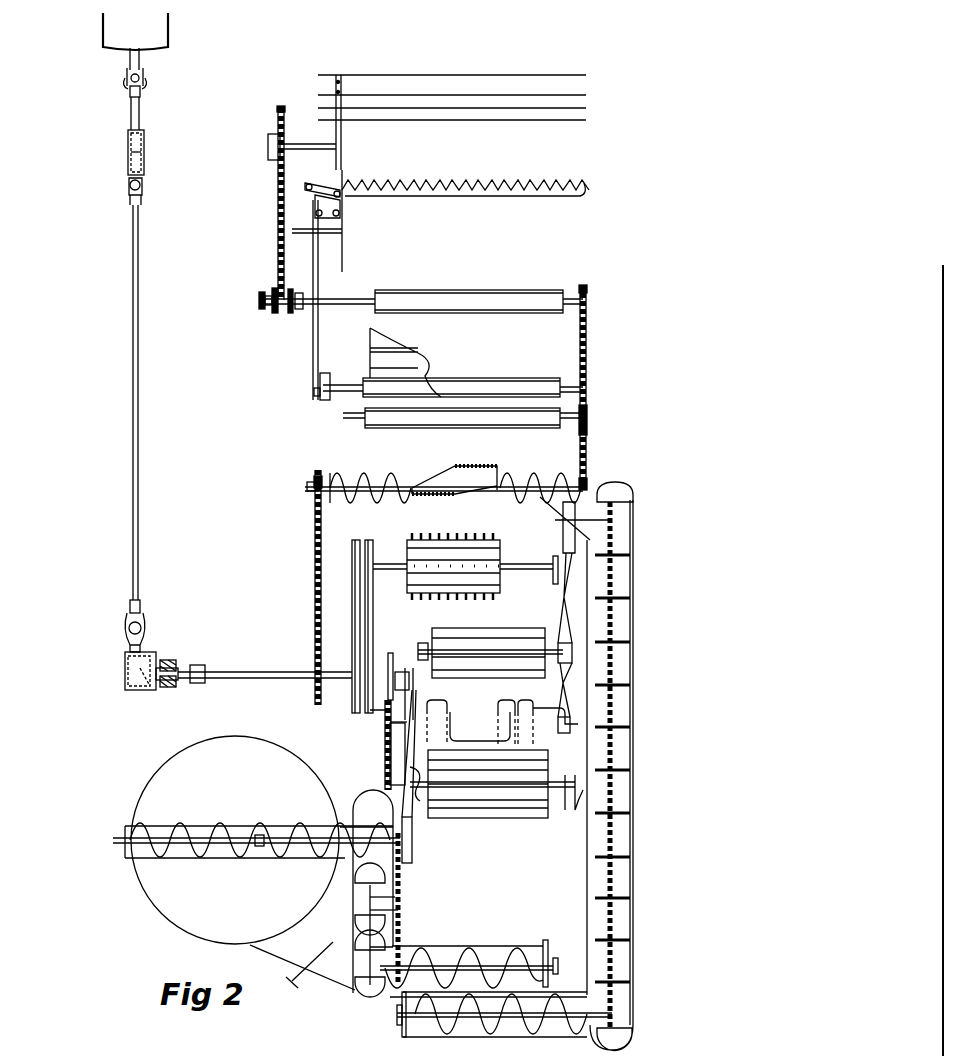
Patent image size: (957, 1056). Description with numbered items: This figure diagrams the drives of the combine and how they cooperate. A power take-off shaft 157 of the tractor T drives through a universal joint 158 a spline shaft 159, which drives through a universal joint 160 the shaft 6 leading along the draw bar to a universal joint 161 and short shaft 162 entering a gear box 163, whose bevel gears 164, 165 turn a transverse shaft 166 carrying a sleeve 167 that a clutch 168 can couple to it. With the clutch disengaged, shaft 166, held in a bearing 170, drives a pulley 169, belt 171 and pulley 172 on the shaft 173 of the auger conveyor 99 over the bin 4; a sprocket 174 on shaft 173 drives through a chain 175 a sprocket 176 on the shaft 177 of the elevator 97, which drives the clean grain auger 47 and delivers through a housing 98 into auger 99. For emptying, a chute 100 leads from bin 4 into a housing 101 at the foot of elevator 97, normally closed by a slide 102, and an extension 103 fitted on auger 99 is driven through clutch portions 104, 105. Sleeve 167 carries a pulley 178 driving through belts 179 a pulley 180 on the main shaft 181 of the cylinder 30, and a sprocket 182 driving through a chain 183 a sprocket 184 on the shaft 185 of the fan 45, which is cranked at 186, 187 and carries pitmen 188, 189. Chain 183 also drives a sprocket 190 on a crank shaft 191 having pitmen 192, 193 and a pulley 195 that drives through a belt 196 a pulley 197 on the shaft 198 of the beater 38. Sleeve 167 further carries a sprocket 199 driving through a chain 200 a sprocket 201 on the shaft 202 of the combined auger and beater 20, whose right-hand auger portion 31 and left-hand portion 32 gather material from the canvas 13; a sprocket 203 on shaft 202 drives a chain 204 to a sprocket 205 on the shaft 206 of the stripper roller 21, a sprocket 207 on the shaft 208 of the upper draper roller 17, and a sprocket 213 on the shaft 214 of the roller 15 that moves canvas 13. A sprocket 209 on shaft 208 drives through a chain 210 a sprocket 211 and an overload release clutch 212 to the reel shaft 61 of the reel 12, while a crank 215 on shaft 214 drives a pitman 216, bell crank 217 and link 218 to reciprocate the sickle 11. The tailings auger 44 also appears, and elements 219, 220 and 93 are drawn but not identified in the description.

The tractor T is at (100, 30).
The power take-off shaft 6 is at (132, 366).
The power take-off shaft 157 is at (141, 65).
The universal joint 158 is at (143, 92).
The spline shaft 159 is at (148, 129).
The universal joint 160 is at (149, 185).
The universal joint 161 is at (154, 616).
The short shaft 162 is at (152, 641).
The gear box 163 is at (120, 673).
The bevel gear 164 is at (126, 664).
The bevel gear 165 is at (140, 688).
The transverse shaft 166 is at (178, 690).
The sleeve 167 is at (232, 678).
The clutch means 168 is at (208, 640).
The reel 12 is at (306, 93).
The reel shaft 61 is at (305, 128).
The chain 210 is at (280, 224).
The sprocket 211 is at (280, 112).
The overload release clutch 212 is at (268, 147).
The link 218 is at (333, 183).
The bell crank member 217 is at (302, 208).
The pitman 216 is at (313, 342).
The sickle 11 is at (396, 190).
The shaft 208 is at (328, 300).
The sprocket 219 is at (258, 305).
The sprocket 209 is at (277, 314).
The bearing 220 is at (296, 291).
The upper draper roller 17 is at (446, 298).
The sprocket 207 is at (587, 297).
The chain 204 is at (587, 338).
The sprocket 213 is at (585, 393).
The shaft 214 is at (566, 384).
The sprocket 205 is at (586, 416).
The shaft 206 is at (571, 421).
The sprocket 203 is at (587, 480).
The roller 15 is at (441, 388).
The crank 215 is at (331, 384).
The draper 13 is at (401, 352).
The stripper roller 21 is at (411, 426).
The combined auger and beater member 20 is at (386, 464).
The auger portion 31 is at (346, 480).
The auger portion 32 is at (520, 476).
The sprocket 201 is at (316, 477).
The shaft 202 is at (307, 488).
The chain 200 is at (316, 542).
The sprocket 199 is at (316, 657).
The cylinder 30 is at (459, 534).
The main shaft 181 is at (388, 564).
The pulley 180 is at (352, 556).
The belts 179 is at (373, 623).
The beater 38 is at (492, 636).
The sprocket 182 is at (418, 651).
The pulley 178 is at (410, 650).
The bearing 170 is at (410, 670).
The pulley 169 is at (409, 678).
The pulley 197 is at (560, 620).
The shaft 198 is at (560, 646).
The belt 196 is at (559, 672).
The pulley 195 is at (558, 726).
The pitman 192 is at (440, 704).
The pitman 193 is at (512, 706).
The crank shaft 191 is at (480, 741).
The chain 183 is at (385, 752).
The sprocket 184 is at (385, 770).
The shaft 185 is at (385, 792).
The sprocket 190 is at (388, 712).
The fan 45 is at (548, 766).
The crank 187 is at (573, 802).
The pitman 189 is at (556, 816).
The pitman 188 is at (415, 815).
The belt 171 is at (419, 753).
The crank 186 is at (417, 773).
The sprocket 174 is at (412, 842).
The pulley 172 is at (412, 856).
The chain 175 is at (405, 872).
The sprocket 176 is at (400, 906).
The shaft 177 is at (400, 921).
The chute 98 is at (352, 862).
The elevator 97 is at (390, 929).
The grain bin 4 is at (235, 840).
The extension 103 is at (220, 862).
The clutch portion 105 is at (262, 834).
The clutch portion 104 is at (269, 860).
The auger conveyor 99 is at (293, 860).
The shaft 173 is at (333, 860).
The chute 100 is at (306, 978).
The slide 102 is at (298, 978).
The housing 101 is at (353, 990).
The clean grain auger 47 is at (491, 942).
The tailings auger 44 is at (460, 1030).
The bucket elevator 93 is at (624, 751).